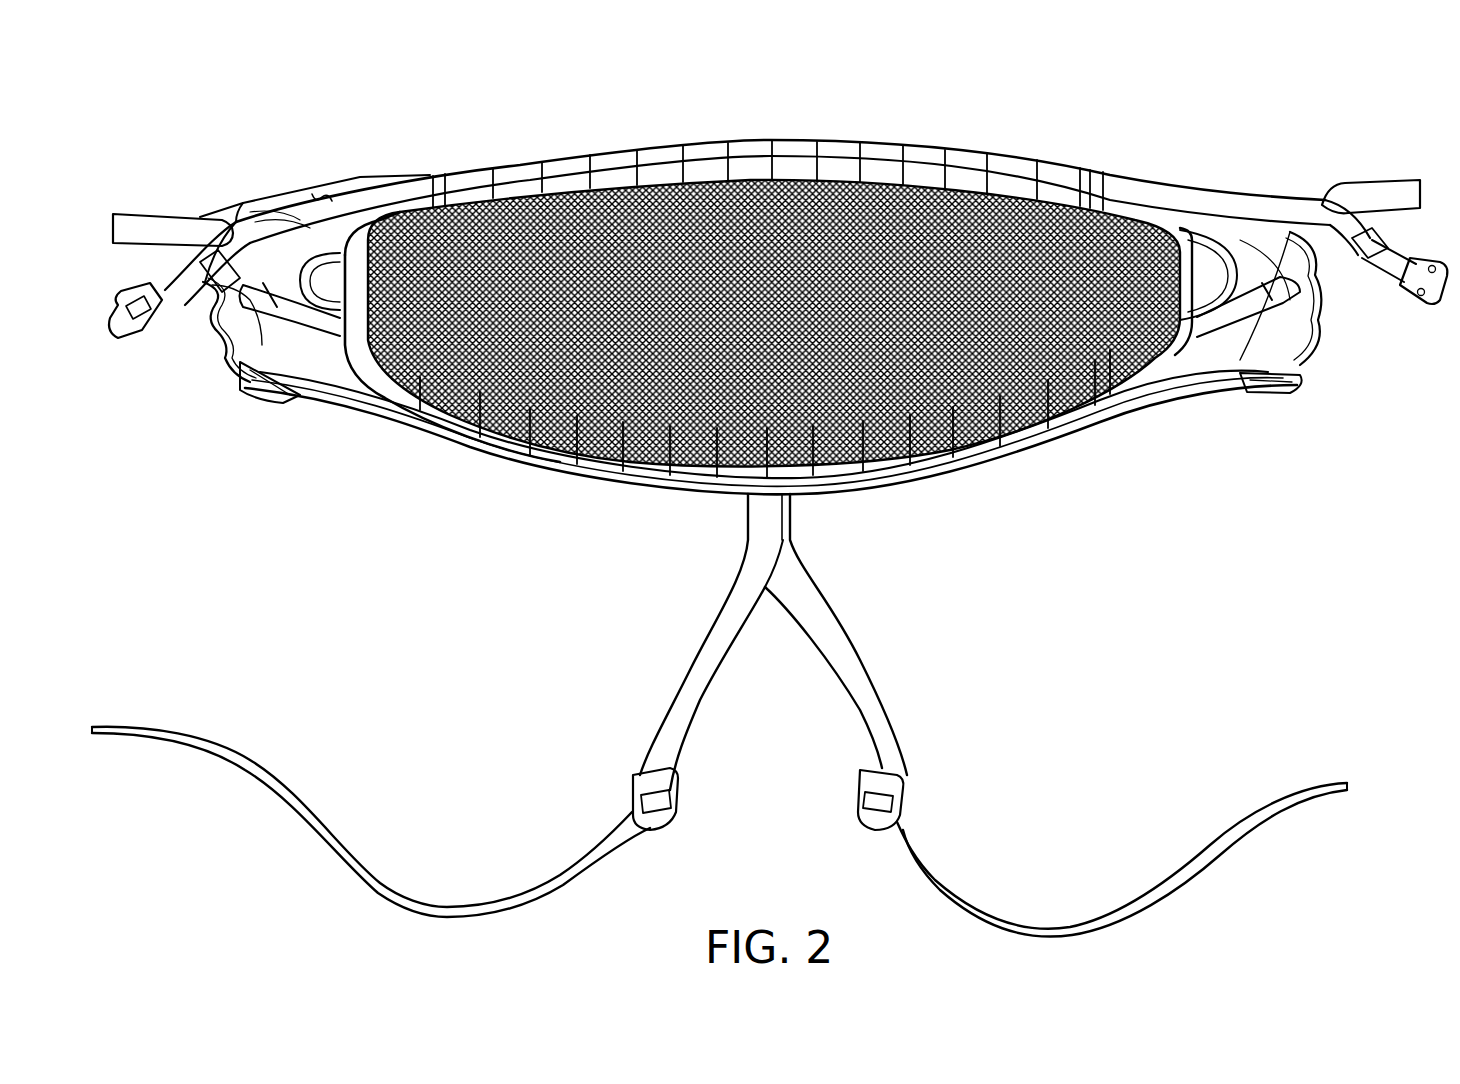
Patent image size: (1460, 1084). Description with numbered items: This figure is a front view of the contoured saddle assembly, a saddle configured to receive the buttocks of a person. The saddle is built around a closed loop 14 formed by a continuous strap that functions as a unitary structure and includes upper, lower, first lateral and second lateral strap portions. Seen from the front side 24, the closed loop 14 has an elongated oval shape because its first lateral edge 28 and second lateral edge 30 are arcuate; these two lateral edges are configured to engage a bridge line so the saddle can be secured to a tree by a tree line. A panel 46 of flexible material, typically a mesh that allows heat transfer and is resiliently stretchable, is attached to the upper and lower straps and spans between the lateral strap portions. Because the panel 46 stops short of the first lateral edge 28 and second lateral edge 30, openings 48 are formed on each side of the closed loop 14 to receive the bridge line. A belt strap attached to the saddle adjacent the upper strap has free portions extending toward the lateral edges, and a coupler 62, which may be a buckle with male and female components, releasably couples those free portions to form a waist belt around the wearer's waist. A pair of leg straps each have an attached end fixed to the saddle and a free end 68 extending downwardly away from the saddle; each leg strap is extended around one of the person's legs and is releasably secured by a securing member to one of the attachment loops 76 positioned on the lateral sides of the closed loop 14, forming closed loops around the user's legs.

The closed loop 14 is at (362, 190).
The front side 24 is at (320, 195).
The first lateral edge 28 is at (1330, 307).
The second lateral edge 30 is at (212, 343).
The panel 46 is at (740, 232).
The openings 48 is at (283, 273).
The coupler 62 is at (127, 335).
The free end 68 is at (100, 730).
The attachment loops 76 is at (283, 375).